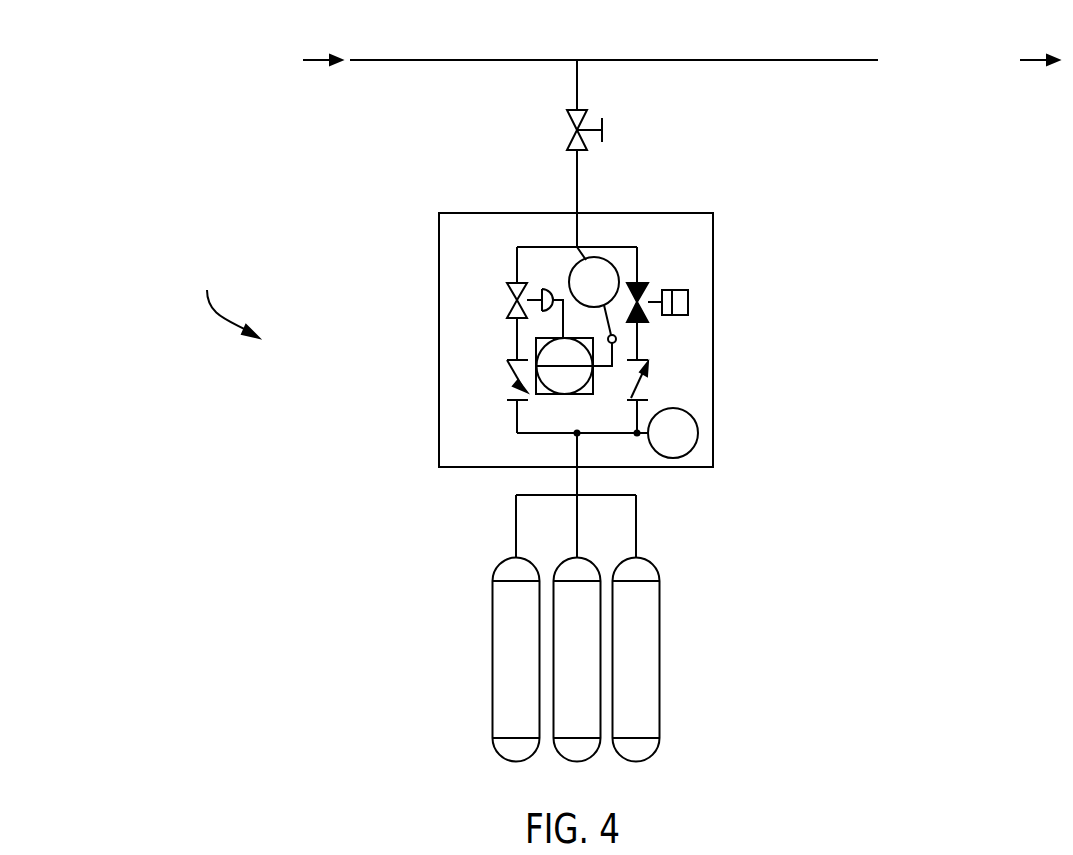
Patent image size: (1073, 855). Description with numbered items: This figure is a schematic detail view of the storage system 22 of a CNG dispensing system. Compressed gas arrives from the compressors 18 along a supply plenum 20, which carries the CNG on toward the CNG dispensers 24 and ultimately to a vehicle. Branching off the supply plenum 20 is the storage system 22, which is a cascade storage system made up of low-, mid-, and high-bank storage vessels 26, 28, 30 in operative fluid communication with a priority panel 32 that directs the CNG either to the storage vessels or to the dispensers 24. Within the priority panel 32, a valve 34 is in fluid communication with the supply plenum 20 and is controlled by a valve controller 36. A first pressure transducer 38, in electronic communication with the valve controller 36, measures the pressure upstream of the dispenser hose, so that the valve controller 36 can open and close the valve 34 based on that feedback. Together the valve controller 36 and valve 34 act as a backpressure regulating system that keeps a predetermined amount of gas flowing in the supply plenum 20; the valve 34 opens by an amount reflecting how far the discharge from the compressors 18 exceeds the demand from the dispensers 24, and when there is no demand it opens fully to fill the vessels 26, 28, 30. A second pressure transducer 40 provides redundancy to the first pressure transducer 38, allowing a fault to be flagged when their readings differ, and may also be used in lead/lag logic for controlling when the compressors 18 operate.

The compressors 18 is at (222, 82).
The supply plenum 20 is at (458, 60).
The storage system 22 is at (228, 302).
The CNG dispensers 24 is at (972, 87).
The low-bank storage vessel 26 is at (524, 728).
The mid-bank storage vessel 28 is at (575, 728).
The high-bank storage vessel 30 is at (641, 728).
The priority panel 32 is at (439, 300).
The valve 34 is at (507, 296).
The valve controller 36 is at (594, 388).
The first pressure transducer 38 is at (617, 270).
The second pressure transducer 40 is at (694, 424).